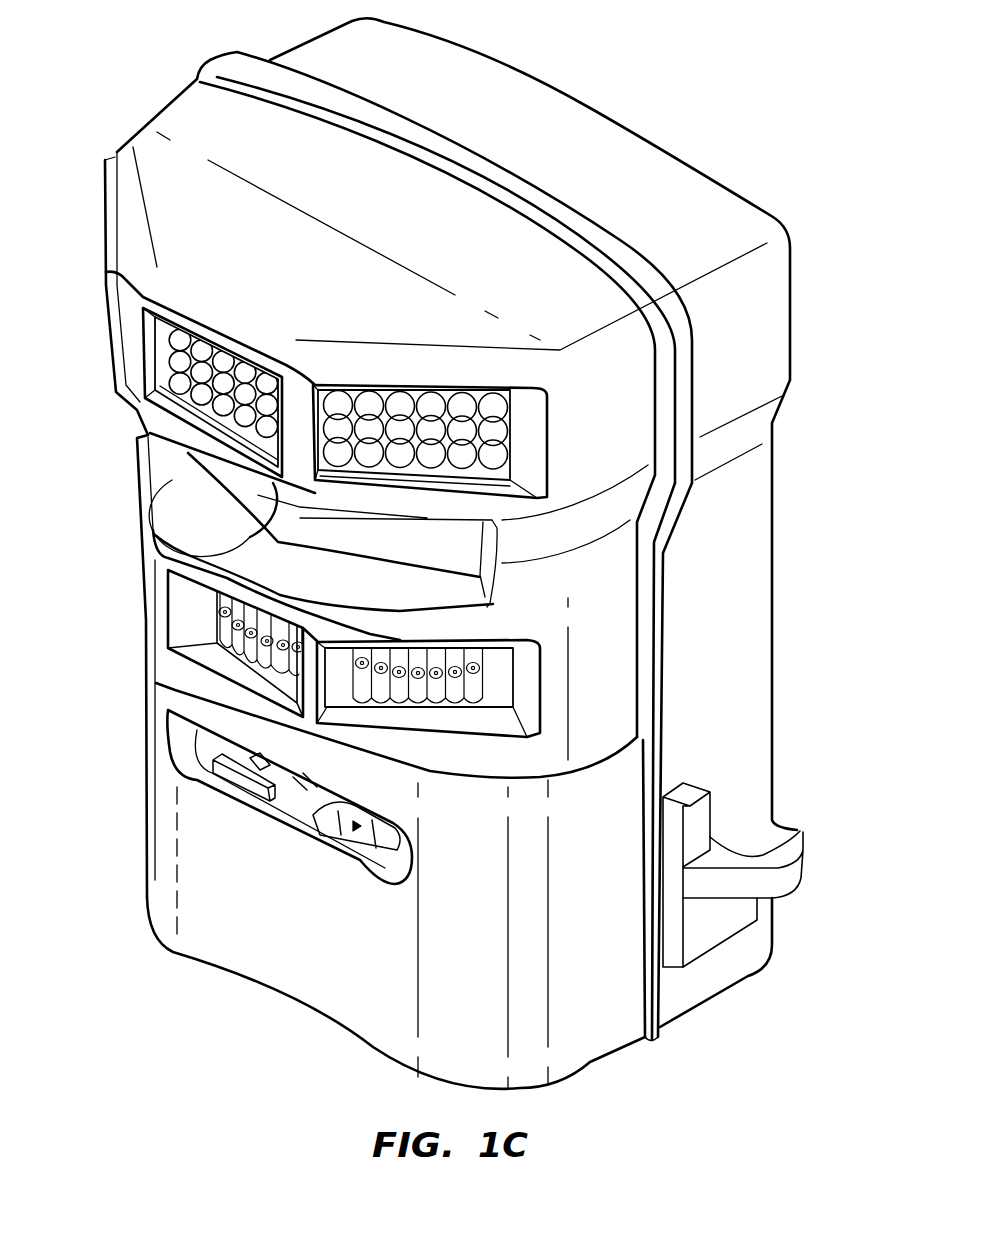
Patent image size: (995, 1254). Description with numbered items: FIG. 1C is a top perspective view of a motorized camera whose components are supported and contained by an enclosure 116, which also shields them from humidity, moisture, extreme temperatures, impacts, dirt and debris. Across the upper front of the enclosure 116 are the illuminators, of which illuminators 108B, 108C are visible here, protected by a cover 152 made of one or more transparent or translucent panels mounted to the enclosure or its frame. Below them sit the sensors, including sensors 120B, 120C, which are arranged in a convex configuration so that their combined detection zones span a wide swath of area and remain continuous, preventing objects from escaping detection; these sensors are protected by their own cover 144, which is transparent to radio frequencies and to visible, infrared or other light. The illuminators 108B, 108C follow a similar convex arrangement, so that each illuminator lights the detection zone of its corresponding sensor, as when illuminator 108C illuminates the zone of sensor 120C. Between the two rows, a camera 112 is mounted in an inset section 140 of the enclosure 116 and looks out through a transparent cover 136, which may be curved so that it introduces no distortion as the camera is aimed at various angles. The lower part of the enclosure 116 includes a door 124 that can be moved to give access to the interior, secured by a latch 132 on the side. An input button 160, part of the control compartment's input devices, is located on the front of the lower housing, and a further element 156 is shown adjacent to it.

The illuminator 108B is at (208, 365).
The illuminator 108C is at (372, 400).
The camera 112 is at (163, 537).
The enclosure 116 is at (683, 388).
The sensor 120B is at (236, 667).
The sensor 120C is at (446, 714).
The door 124 is at (623, 1055).
The latch 132 is at (800, 830).
The cover 136 is at (165, 506).
The inset section 140 is at (160, 455).
The cover 144 is at (500, 643).
The cover 152 is at (125, 293).
The button 156 is at (266, 803).
The input button 160 is at (345, 833).